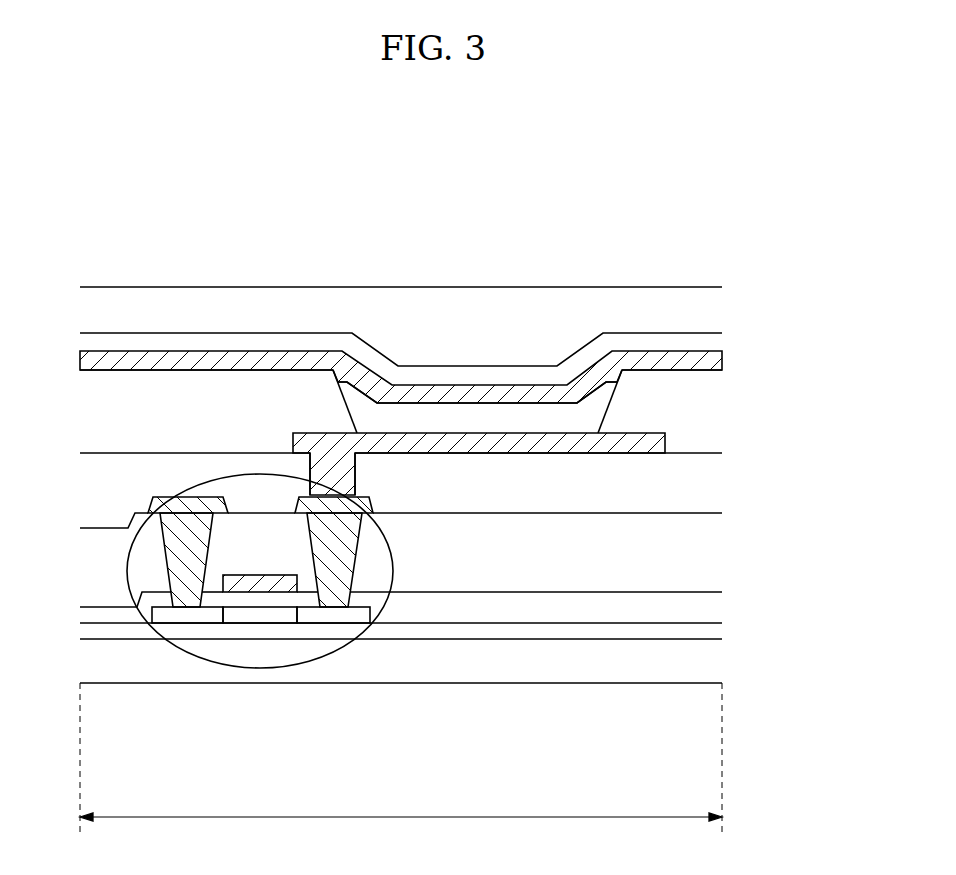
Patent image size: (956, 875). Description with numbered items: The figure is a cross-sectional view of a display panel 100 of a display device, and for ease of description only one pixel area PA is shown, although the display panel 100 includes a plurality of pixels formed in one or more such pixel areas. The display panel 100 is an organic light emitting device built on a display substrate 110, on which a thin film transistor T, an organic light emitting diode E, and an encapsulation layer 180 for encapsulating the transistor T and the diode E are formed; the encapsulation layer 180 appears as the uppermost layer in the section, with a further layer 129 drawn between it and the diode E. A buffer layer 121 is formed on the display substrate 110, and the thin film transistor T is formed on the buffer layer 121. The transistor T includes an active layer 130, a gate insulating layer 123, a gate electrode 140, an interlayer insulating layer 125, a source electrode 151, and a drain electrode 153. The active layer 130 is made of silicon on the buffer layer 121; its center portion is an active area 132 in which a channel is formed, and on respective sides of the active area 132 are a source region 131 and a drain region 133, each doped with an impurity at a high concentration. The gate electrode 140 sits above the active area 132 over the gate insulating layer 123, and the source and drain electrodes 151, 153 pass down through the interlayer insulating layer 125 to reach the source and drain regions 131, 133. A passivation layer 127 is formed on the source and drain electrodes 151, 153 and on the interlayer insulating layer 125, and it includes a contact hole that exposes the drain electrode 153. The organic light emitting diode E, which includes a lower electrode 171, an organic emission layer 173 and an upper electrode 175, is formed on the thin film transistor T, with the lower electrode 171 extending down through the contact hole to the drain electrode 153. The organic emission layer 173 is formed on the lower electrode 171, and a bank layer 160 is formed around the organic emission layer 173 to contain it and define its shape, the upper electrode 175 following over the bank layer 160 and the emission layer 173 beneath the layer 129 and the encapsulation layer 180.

The display panel 100 is at (690, 251).
The display substrate 110 is at (715, 657).
The buffer layer 121 is at (715, 630).
The gate insulating layer 123 is at (715, 603).
The interlayer insulating layer 125 is at (715, 553).
The passivation layer 127 is at (715, 478).
The encapsulation layer 129 is at (715, 340).
The active layer 130 is at (261, 698).
The source region 131 is at (192, 618).
The active area 132 is at (267, 618).
The drain region 133 is at (333, 677).
The gate electrode 140 is at (267, 573).
The source electrode 151 is at (182, 513).
The drain electrode 153 is at (332, 513).
The bank layer 160 is at (715, 396).
The lower electrode 171 is at (402, 443).
The organic emission layer 173 is at (472, 420).
The upper electrode 175 is at (532, 392).
The encapsulation layer 180 is at (715, 305).
The organic light emitting diode E is at (392, 228).
The thin film transistor T is at (390, 604).
The pixel area PA is at (401, 768).